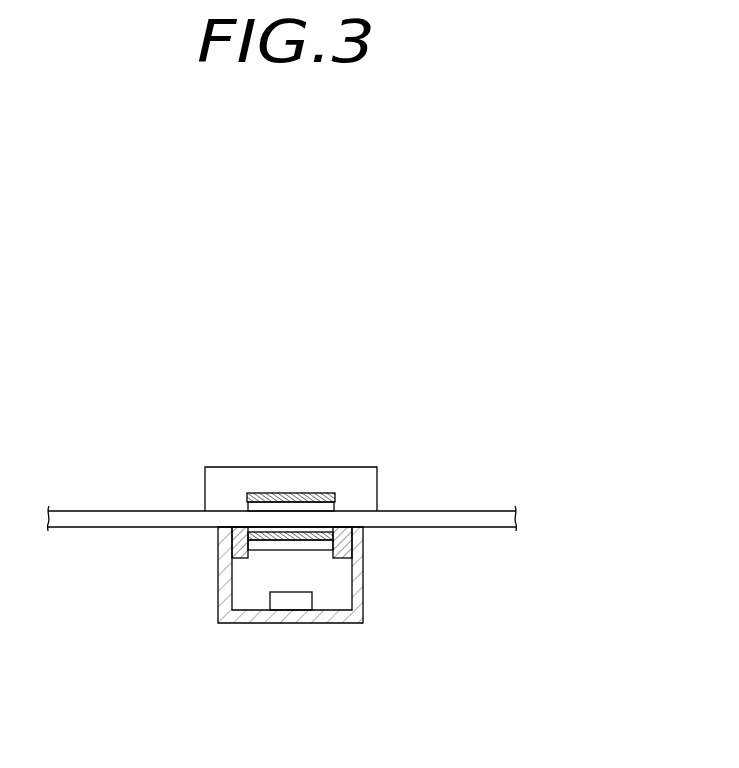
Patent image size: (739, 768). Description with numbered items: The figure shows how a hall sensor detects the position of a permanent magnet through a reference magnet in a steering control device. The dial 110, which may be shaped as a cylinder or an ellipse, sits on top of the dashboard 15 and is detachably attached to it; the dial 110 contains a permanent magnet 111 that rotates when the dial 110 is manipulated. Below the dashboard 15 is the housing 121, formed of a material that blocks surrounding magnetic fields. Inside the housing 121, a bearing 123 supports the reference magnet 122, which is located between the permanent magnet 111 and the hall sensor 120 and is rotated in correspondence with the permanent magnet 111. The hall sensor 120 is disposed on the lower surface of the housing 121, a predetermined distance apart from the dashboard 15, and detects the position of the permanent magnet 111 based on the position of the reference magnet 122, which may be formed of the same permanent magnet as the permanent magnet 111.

The dashboard 15 is at (483, 517).
The dial 110 is at (362, 465).
The permanent magnet 111 is at (260, 505).
The hall sensor 120 is at (292, 603).
The housing 121 is at (222, 595).
The reference magnet 122 is at (298, 537).
The bearing 123 is at (238, 553).